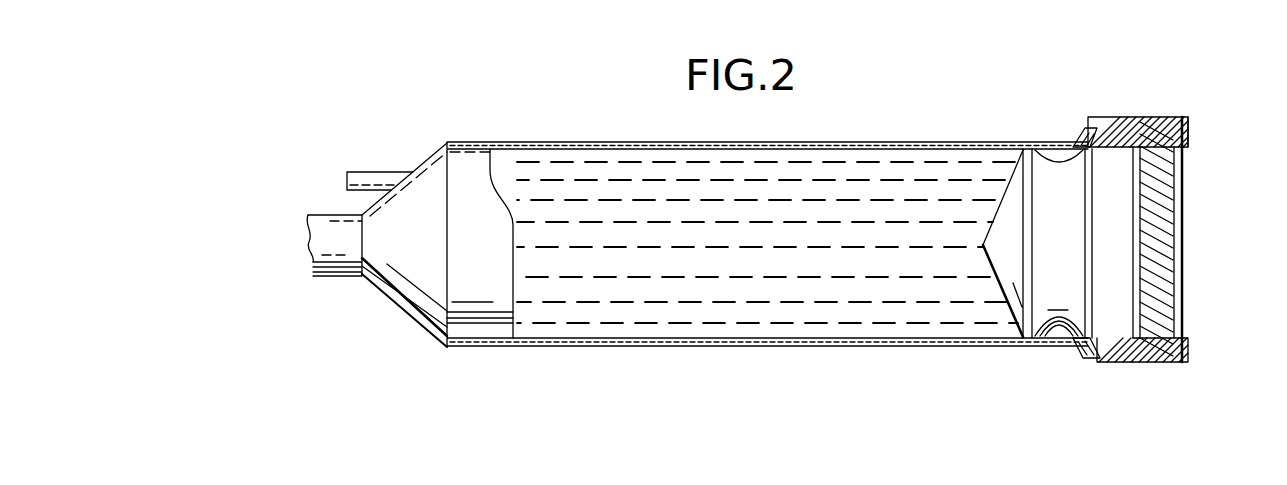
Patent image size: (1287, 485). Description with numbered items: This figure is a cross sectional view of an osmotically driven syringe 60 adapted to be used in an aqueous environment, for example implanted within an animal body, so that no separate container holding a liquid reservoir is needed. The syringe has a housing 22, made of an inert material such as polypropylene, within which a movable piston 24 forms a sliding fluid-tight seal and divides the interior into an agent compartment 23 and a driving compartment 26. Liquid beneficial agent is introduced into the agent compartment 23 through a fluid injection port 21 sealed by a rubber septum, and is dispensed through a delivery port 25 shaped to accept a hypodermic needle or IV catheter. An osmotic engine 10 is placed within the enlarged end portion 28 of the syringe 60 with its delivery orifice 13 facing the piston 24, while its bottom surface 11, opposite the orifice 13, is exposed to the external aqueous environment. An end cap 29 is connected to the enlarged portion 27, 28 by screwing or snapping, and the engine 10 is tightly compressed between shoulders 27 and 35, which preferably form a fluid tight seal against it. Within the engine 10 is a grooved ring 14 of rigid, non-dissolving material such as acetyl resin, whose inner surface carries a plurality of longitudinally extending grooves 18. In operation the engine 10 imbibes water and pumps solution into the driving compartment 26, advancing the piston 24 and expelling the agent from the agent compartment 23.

The osmotic engine 10 is at (1138, 240).
The bottom surface 11 is at (1186, 272).
The delivery orifice 13 is at (1084, 243).
The grooved ring 14 is at (1133, 168).
The longitudinally extending grooves 18 is at (1130, 318).
The fluid injection port 21 is at (360, 172).
The housing 22 is at (527, 142).
The agent compartment 23 is at (670, 310).
The piston 24 is at (1001, 183).
The delivery port 25 is at (308, 238).
The driving compartment 26 is at (1100, 360).
The shoulder 27 is at (1118, 128).
The enlarged end portion 28 is at (1147, 363).
The end cap 29 is at (1122, 363).
The shoulder 35 is at (1188, 133).
The osmotically driven syringe 60 is at (633, 140).